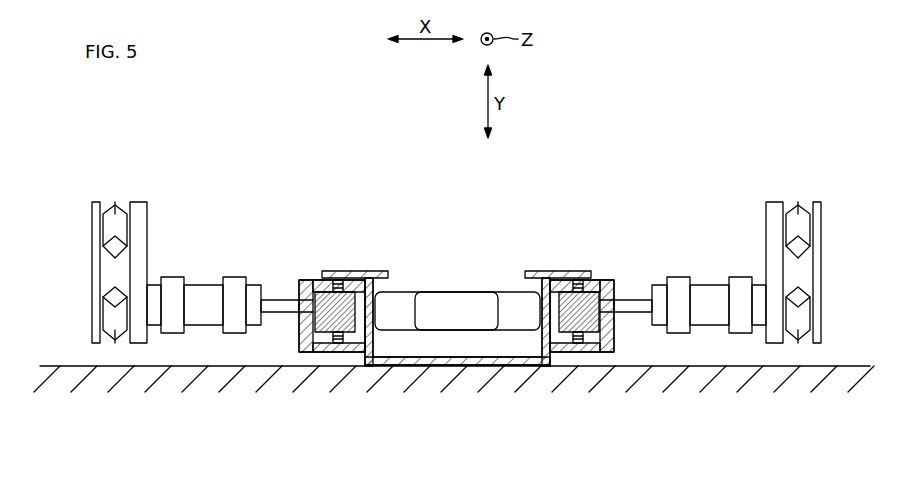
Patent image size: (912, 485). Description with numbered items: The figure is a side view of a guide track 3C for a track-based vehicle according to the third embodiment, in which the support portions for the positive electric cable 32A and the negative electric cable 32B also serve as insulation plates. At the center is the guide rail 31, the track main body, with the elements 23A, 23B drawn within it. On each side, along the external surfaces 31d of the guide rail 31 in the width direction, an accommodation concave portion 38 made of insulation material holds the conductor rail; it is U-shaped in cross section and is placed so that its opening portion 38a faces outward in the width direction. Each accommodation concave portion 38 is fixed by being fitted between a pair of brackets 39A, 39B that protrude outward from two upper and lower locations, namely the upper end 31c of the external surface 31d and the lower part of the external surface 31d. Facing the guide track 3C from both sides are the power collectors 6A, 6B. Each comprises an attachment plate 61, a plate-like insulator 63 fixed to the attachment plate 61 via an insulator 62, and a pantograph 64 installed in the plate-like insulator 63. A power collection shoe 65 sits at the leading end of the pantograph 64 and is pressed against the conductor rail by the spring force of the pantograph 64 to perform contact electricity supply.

The attachment plate 61 is at (92, 218).
The insulator 62 is at (114, 206).
The plate-like insulator 63 is at (137, 201).
The pantograph 64 is at (200, 283).
The power collection shoe 65 is at (280, 313).
The accommodation concave portion 38 is at (311, 280).
The opening portion 38a is at (300, 290).
The bracket 39A is at (345, 271).
The bracket 39B is at (312, 348).
The positive electric cable 32A is at (333, 340).
The negative electric cable 32B is at (580, 343).
The guide rail 31 is at (378, 290).
The upper end 31c is at (370, 278).
The external surface 31d is at (366, 352).
The piezoelectric element 23A is at (505, 332).
The piezoelectric element 23B is at (404, 332).
The guide track 3C is at (603, 239).
The power collector 6A is at (198, 348).
The power collector 6B is at (739, 348).